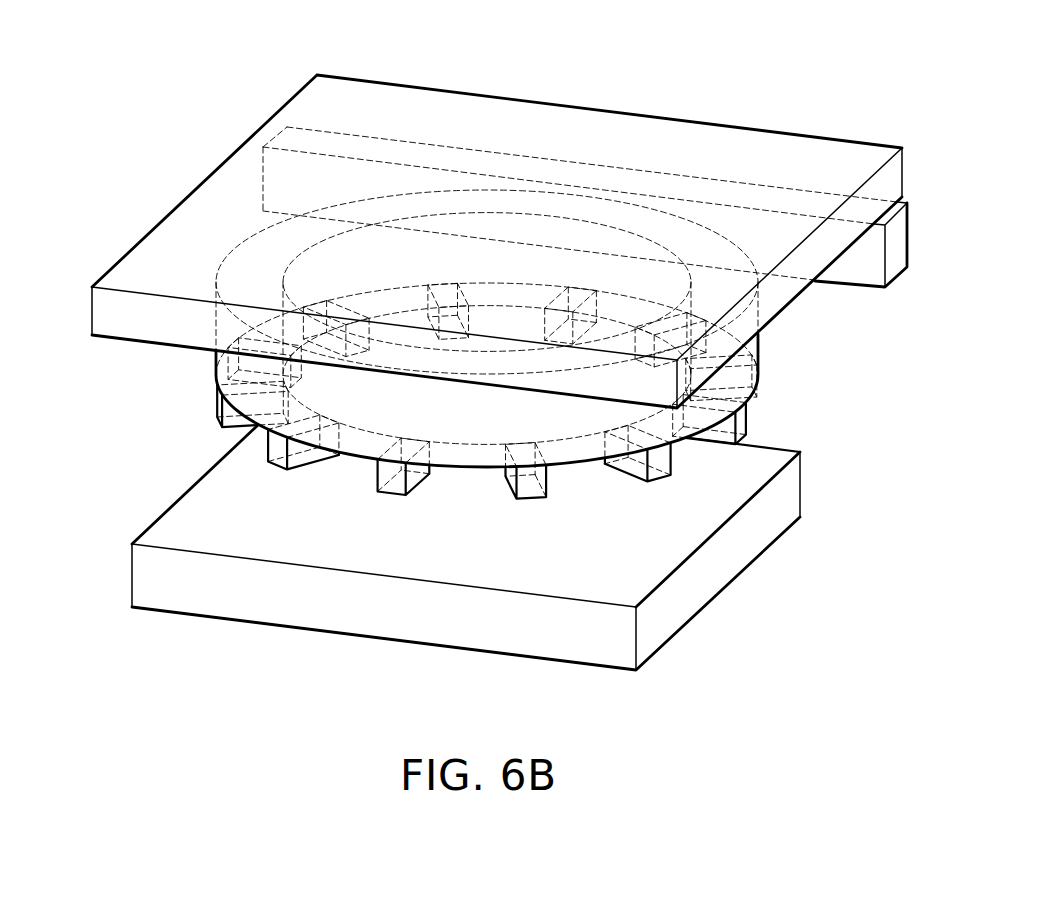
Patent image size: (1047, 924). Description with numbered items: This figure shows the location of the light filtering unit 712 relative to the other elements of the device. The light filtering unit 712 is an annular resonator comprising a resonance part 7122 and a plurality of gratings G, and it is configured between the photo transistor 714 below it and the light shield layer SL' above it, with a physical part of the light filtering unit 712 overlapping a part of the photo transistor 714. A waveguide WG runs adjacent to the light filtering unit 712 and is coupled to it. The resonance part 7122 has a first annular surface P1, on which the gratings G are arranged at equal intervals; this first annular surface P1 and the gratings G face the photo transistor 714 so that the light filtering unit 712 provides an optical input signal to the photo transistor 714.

The light shield layer SL' is at (497, 229).
The waveguide WG is at (897, 247).
The light filtering unit 712 is at (393, 407).
The resonance part 7122 is at (562, 428).
The photo transistor 714 is at (243, 590).
The gratings G is at (417, 473).
The first annular surface P1 is at (256, 438).